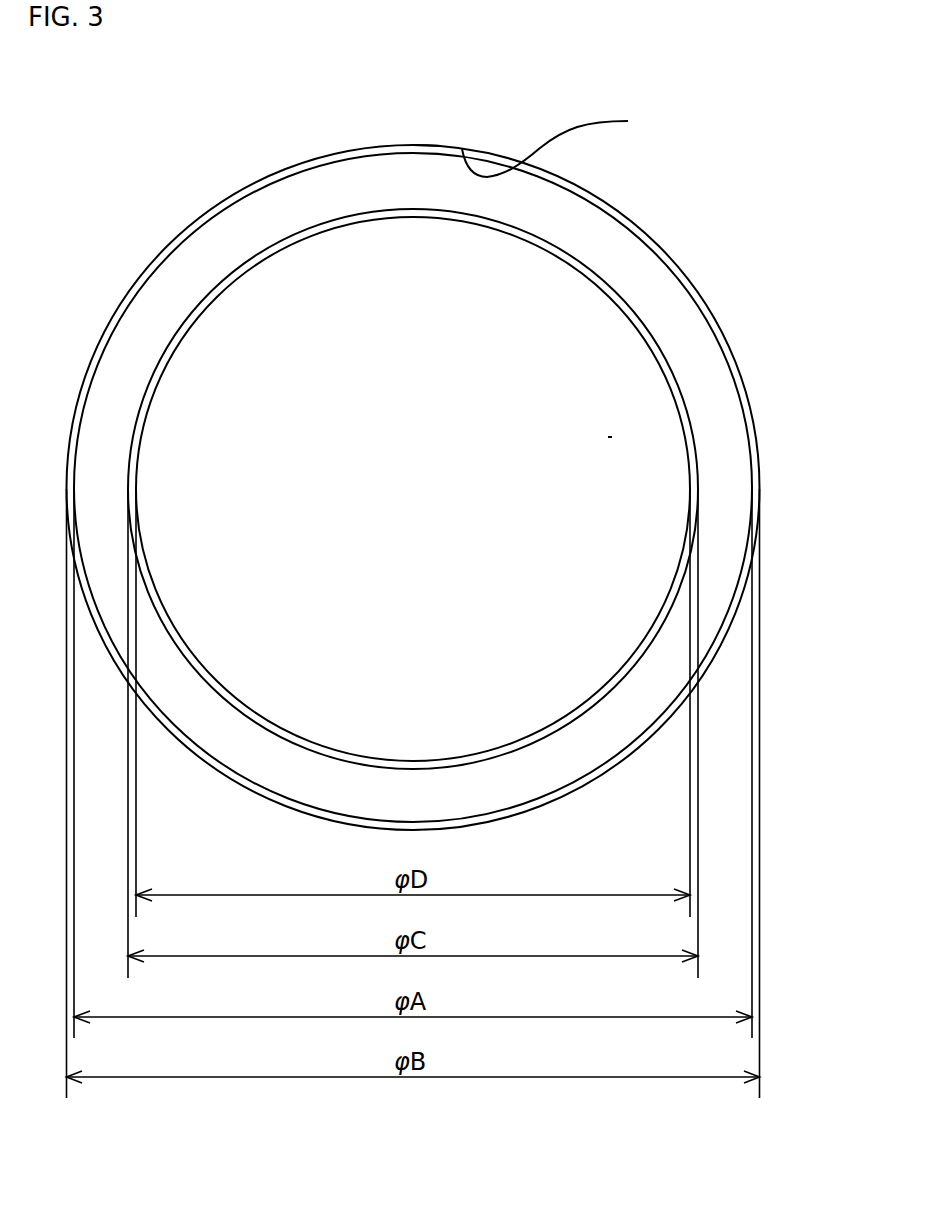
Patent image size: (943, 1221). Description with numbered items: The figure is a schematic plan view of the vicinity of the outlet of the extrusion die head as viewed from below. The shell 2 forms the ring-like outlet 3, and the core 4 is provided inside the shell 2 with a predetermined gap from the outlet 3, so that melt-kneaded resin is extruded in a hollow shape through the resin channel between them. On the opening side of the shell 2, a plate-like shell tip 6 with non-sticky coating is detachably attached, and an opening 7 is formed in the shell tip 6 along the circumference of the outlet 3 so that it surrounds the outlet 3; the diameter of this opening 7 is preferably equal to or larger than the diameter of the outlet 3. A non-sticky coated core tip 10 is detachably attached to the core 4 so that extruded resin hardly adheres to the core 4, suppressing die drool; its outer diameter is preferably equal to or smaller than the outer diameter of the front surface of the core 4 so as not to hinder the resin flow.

The shell 2 is at (636, 229).
The outlet 3 is at (678, 331).
The core 4 is at (243, 265).
The shell tip 6 is at (414, 127).
The opening 7 is at (553, 143).
The core tip 10 is at (608, 437).